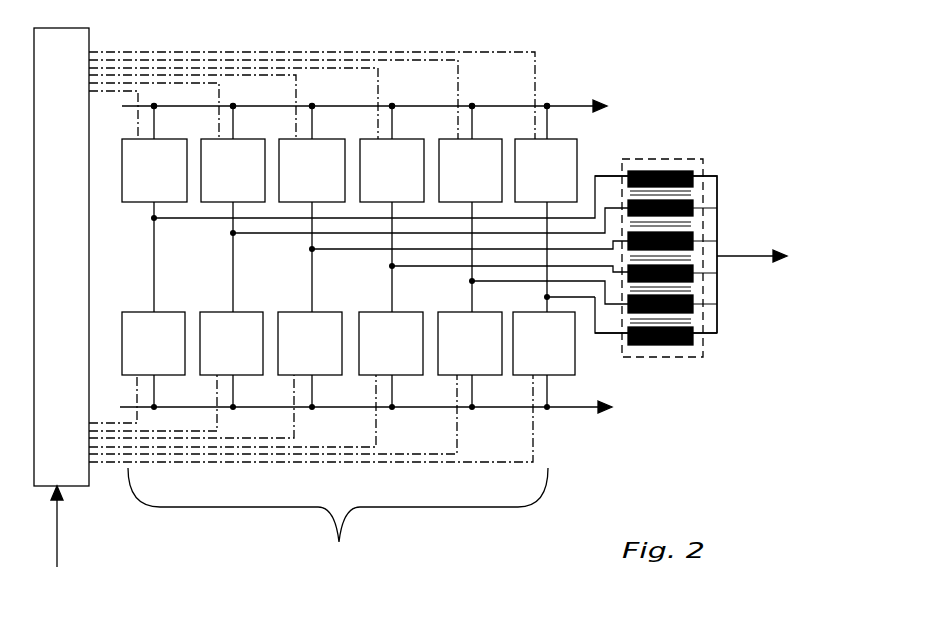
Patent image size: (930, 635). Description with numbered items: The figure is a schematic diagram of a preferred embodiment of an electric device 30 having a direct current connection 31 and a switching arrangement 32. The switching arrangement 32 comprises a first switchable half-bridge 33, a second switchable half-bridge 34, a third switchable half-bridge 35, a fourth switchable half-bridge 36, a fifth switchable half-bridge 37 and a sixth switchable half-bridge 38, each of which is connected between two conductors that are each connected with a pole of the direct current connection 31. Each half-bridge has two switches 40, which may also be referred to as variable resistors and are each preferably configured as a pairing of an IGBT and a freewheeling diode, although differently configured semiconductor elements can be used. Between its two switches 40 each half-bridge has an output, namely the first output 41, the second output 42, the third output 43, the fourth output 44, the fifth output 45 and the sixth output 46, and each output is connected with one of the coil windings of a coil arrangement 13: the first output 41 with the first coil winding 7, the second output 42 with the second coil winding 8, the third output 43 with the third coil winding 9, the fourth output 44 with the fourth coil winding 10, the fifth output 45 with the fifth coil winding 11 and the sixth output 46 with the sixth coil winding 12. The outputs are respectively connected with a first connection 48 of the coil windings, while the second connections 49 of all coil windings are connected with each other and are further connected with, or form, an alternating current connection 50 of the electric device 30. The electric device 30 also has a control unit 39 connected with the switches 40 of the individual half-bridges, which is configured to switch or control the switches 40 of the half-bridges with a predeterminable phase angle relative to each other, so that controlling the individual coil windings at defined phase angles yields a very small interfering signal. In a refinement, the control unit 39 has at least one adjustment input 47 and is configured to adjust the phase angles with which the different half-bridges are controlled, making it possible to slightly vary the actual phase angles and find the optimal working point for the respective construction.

The first coil winding 7 is at (693, 172).
The second coil winding 8 is at (693, 202).
The third coil winding 9 is at (693, 235).
The fourth coil winding 10 is at (693, 277).
The fifth coil winding 11 is at (693, 310).
The sixth coil winding 12 is at (662, 345).
The coil arrangement 13 is at (653, 157).
The electric device 30 is at (652, 57).
The direct current connection 31 is at (580, 106).
The switching arrangement 32 is at (338, 524).
The first switchable half-bridge 33 is at (158, 132).
The second switchable half-bridge 34 is at (237, 132).
The third switchable half-bridge 35 is at (313, 128).
The fourth switchable half-bridge 36 is at (393, 128).
The fifth switchable half-bridge 37 is at (473, 128).
The sixth switchable half-bridge 38 is at (548, 123).
The control unit 39 is at (75, 266).
The switch 40 is at (168, 187).
The first output 41 is at (156, 220).
The second output 42 is at (235, 235).
The third output 43 is at (314, 251).
The fourth output 44 is at (394, 268).
The fifth output 45 is at (474, 283).
The sixth output 46 is at (578, 298).
The adjustment input 47 is at (57, 553).
The first connection 48 is at (627, 173).
The second connection 49 is at (693, 338).
The alternating current connection 50 is at (768, 248).